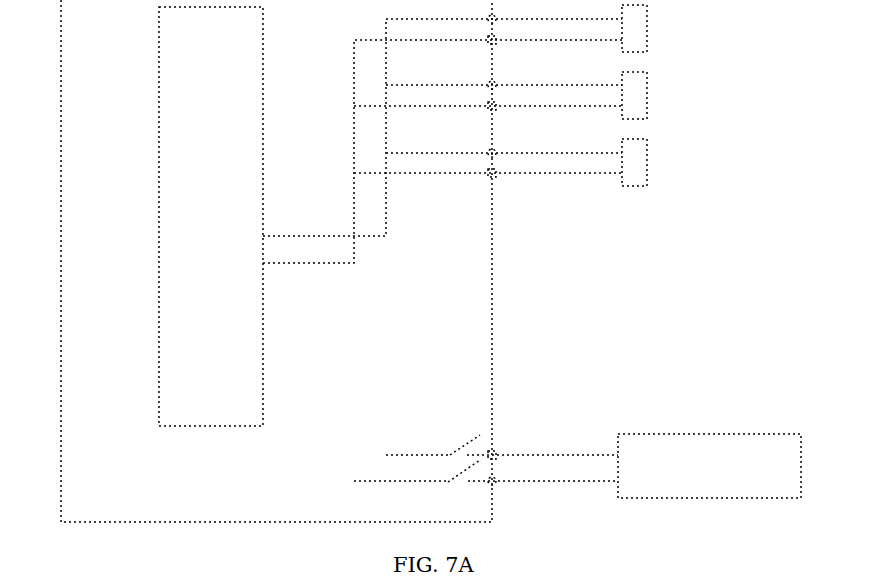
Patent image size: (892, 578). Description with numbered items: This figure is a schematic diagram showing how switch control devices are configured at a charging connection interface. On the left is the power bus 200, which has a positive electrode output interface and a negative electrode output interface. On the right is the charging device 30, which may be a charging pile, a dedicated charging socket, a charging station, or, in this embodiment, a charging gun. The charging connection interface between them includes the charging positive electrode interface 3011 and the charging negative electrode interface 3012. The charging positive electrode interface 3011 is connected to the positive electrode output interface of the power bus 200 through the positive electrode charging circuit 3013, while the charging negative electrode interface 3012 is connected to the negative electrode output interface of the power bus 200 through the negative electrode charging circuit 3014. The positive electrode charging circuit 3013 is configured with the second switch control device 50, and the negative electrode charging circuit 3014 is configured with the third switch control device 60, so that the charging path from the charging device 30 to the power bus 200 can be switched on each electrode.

The power bus 200 is at (211, 216).
The charging device 30 is at (709, 466).
The second switch control device 50 is at (478, 437).
The third switch control device 60 is at (479, 461).
The charging positive electrode interface 3011 is at (562, 437).
The charging negative electrode interface 3012 is at (572, 516).
The positive electrode charging circuit 3013 is at (413, 455).
The negative electrode charging circuit 3014 is at (414, 481).